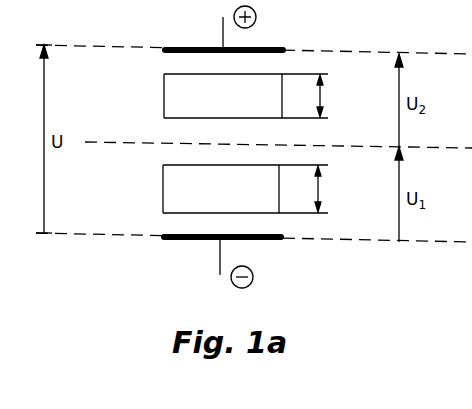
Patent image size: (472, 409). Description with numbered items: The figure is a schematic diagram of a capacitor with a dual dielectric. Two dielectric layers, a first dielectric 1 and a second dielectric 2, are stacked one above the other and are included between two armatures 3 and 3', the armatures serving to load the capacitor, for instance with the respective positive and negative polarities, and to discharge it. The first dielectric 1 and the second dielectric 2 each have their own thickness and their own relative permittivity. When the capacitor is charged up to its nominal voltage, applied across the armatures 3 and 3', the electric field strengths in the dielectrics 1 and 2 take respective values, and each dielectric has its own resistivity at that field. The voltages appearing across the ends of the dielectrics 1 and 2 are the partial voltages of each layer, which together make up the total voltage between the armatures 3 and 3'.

The dielectric 1 is at (163, 192).
The dielectric 2 is at (164, 95).
The armature 3 is at (197, 48).
The armature 3' is at (195, 238).